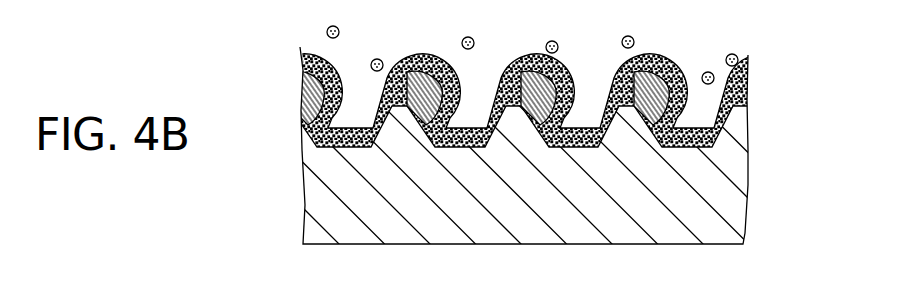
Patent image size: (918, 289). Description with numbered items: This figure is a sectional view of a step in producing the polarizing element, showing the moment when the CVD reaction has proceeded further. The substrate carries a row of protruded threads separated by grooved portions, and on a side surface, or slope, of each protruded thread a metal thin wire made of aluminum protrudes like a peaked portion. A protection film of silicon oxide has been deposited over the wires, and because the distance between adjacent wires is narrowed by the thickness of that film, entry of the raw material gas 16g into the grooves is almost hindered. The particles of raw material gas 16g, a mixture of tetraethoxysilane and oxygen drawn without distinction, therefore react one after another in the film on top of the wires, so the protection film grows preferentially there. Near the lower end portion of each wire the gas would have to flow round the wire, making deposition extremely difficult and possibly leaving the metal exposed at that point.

The raw material gas 16g is at (327, 29).